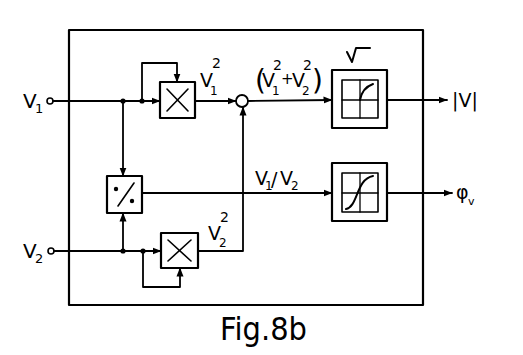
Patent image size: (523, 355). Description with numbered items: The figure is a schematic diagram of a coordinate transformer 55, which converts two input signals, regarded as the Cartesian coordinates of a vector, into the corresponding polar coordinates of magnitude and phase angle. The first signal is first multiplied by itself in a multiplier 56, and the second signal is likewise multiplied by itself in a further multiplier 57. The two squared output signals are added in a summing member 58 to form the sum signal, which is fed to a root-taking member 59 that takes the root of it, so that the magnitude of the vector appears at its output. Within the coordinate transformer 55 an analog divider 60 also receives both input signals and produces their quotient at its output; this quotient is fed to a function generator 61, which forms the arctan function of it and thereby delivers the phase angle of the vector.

The coordinate transformer 55 is at (122, 40).
The multiplier 56 is at (165, 119).
The further multiplier 57 is at (180, 233).
The summing member 58 is at (241, 95).
The root-taking member 59 is at (387, 84).
The analog divider 60 is at (142, 181).
The function generator 61 is at (387, 176).